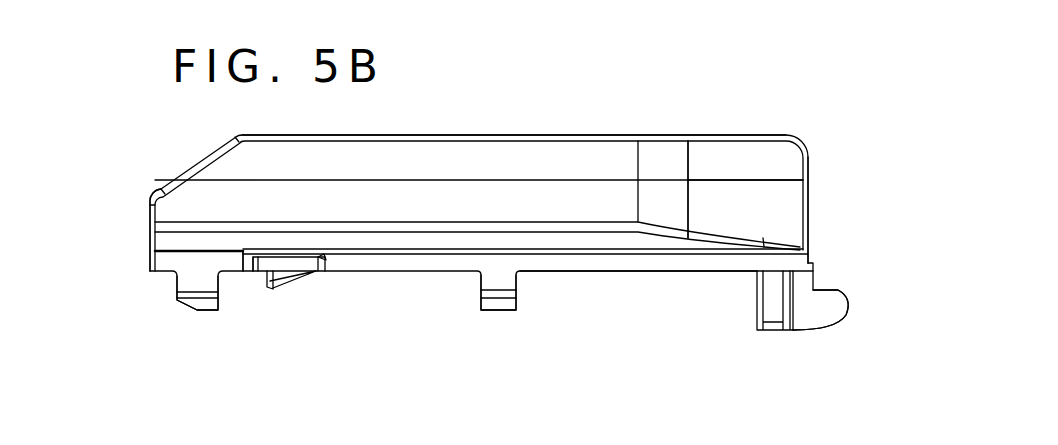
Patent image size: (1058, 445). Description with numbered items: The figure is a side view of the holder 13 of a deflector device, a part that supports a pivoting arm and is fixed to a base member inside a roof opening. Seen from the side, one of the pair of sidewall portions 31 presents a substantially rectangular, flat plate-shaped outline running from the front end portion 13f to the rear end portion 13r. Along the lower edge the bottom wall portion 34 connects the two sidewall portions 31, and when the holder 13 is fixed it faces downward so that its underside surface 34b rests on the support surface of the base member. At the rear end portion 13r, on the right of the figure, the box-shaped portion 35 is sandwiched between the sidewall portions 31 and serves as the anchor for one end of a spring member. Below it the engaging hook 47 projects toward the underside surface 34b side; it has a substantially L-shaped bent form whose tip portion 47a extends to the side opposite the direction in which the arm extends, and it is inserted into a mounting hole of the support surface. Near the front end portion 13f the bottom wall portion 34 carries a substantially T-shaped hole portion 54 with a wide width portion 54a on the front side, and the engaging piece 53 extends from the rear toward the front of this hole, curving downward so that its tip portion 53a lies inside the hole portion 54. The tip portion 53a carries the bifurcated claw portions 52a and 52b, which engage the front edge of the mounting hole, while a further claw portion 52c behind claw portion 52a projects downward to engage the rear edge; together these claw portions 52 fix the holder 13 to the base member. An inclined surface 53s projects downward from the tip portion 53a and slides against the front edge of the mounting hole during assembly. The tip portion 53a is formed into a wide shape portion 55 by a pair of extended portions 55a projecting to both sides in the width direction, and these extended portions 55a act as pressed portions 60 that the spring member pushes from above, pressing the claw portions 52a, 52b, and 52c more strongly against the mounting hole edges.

The holder 13 is at (838, 53).
The front end portion 13f is at (150, 218).
The rear end portion 13r is at (808, 198).
The sidewall portion 31 is at (468, 137).
The box-shaped portion 35 is at (742, 152).
The bottom wall portion 34 is at (638, 299).
The underside surface 34b is at (552, 272).
The engaging hook 47 is at (757, 328).
The tip portion 47a is at (838, 302).
The claw portion 52 is at (314, 321).
The claw portion 52a is at (273, 272).
The claw portion 52b is at (252, 272).
The claw portion 52c is at (388, 272).
The engaging piece 53 is at (295, 226).
The tip portion 53a is at (290, 268).
The inclined surface 53s is at (285, 280).
The hole portion 54 is at (284, 211).
The wide width portion 54a is at (252, 268).
The extended portion 55a is at (406, 224).
The wide shape portion 55 is at (406, 224).
The pressed portion 60 is at (322, 257).